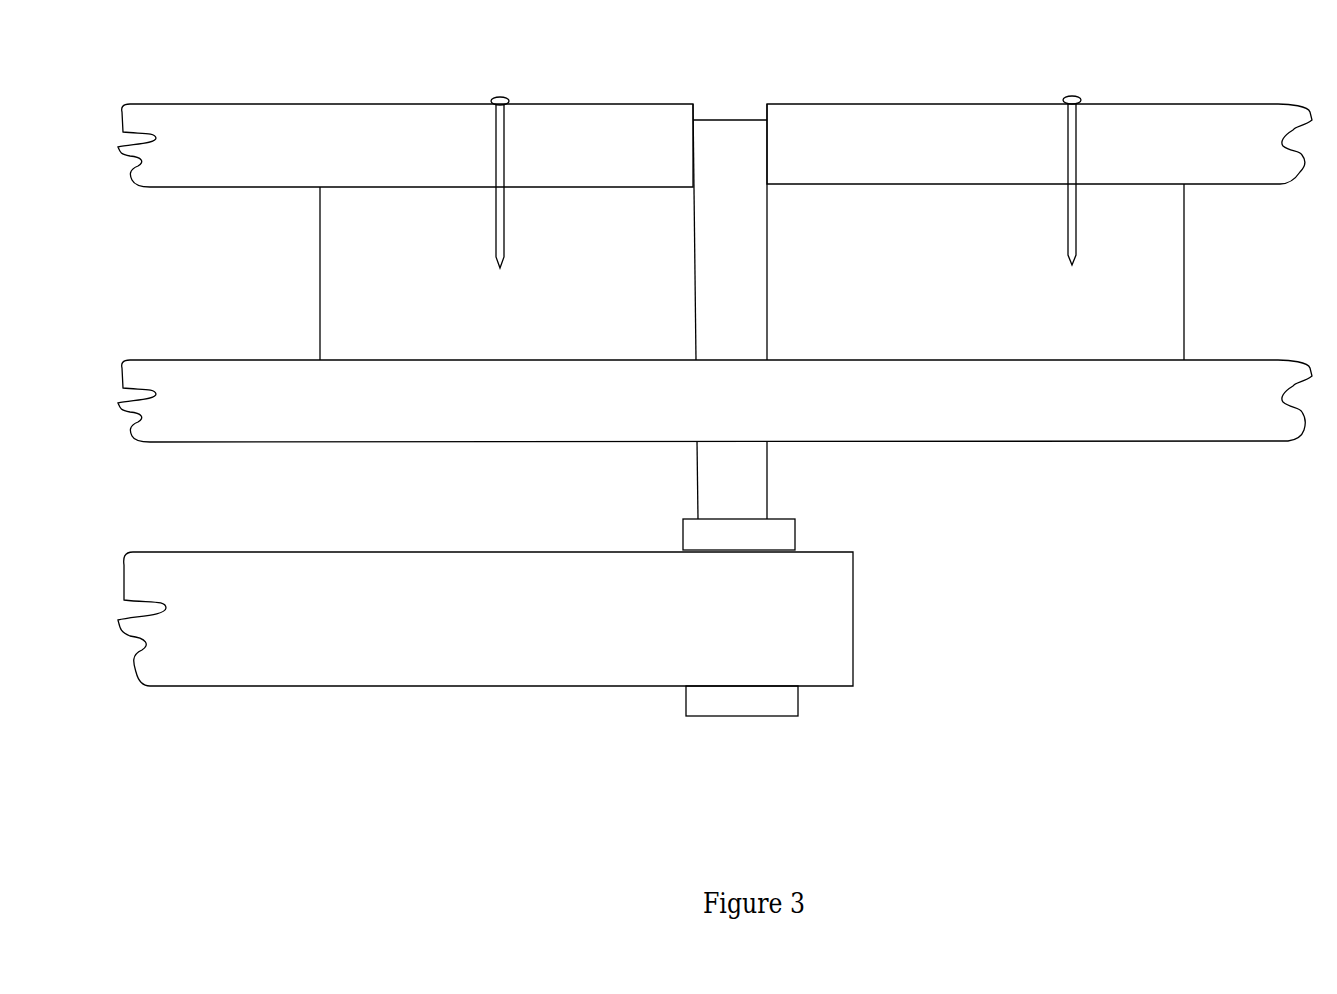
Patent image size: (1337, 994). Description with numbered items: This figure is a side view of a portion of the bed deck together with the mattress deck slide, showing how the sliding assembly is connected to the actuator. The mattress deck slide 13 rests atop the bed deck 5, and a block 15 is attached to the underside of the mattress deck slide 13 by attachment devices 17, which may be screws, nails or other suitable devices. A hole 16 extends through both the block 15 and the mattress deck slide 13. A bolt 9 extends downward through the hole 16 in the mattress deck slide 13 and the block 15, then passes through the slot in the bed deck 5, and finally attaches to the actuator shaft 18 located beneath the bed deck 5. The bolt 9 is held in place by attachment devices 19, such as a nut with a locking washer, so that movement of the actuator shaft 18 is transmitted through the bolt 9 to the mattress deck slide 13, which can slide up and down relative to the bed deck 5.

The bed deck 5 is at (485, 407).
The bolt 9 is at (737, 477).
The mattress deck slide 13 is at (623, 121).
The block 15 is at (590, 304).
The hole 16 is at (722, 118).
The attachment devices 17 is at (502, 96).
The actuator shaft 18 is at (433, 623).
The attachment devices 19 is at (777, 533).